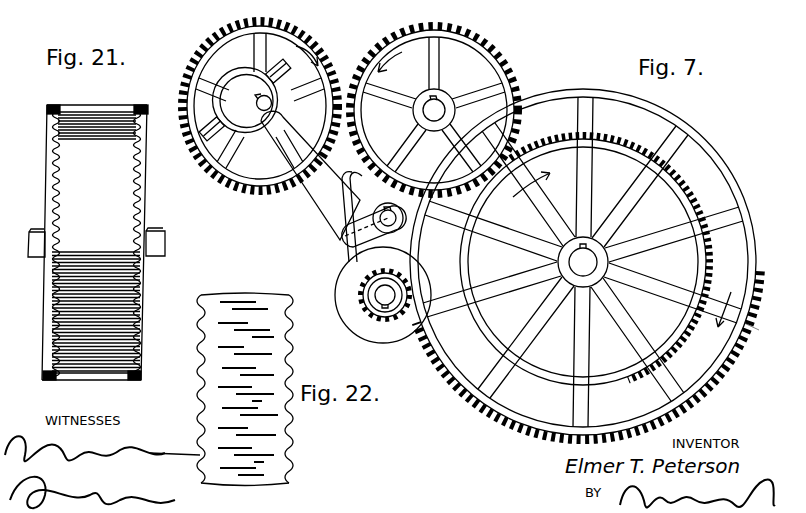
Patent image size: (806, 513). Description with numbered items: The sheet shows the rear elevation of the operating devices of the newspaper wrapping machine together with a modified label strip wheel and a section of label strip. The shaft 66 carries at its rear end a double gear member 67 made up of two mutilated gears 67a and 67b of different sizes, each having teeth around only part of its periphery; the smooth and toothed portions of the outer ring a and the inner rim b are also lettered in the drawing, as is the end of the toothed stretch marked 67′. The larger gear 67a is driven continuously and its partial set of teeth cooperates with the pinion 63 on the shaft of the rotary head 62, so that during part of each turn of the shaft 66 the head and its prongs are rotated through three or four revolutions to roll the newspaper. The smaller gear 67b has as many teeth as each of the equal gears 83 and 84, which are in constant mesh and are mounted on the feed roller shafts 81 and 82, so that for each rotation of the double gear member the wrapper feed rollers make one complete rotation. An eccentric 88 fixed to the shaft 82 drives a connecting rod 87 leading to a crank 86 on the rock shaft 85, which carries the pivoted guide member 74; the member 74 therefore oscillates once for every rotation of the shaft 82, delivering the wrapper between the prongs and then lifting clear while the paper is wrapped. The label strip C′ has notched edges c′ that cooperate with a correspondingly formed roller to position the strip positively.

In FIG. 22, the label strip C′ is at (267, 427).
In FIG. 22, the notches c′ is at (288, 468).
In FIG. 7, the gear 84 is at (212, 45).
In FIG. 7, the eccentric 88 is at (240, 85).
In FIG. 7, the shaft 82 is at (267, 112).
In FIG. 7, the connecting rod 87 is at (313, 190).
In FIG. 7, the gear 83 is at (487, 54).
In FIG. 7, the shaft 81 is at (437, 113).
In FIG. 7, the pivoted guide member 74 is at (357, 192).
In FIG. 7, the crank 86 is at (350, 232).
In FIG. 7, the rock shaft 85 is at (404, 225).
In FIG. 7, the rotary head 62 is at (348, 281).
In FIG. 7, the pinion 63 is at (362, 294).
In FIG. 7, the outer ring a is at (725, 168).
In FIG. 7, the inner toothed rim b is at (690, 186).
In FIG. 7, the mutilated gear 67a is at (538, 428).
In FIG. 7, the outer teeth end 67′ is at (752, 325).
In FIG. 7, the mutilated gear 67b is at (598, 380).
In FIG. 7, the double gear member 67 is at (548, 384).
In FIG. 7, the shaft 66 is at (574, 273).